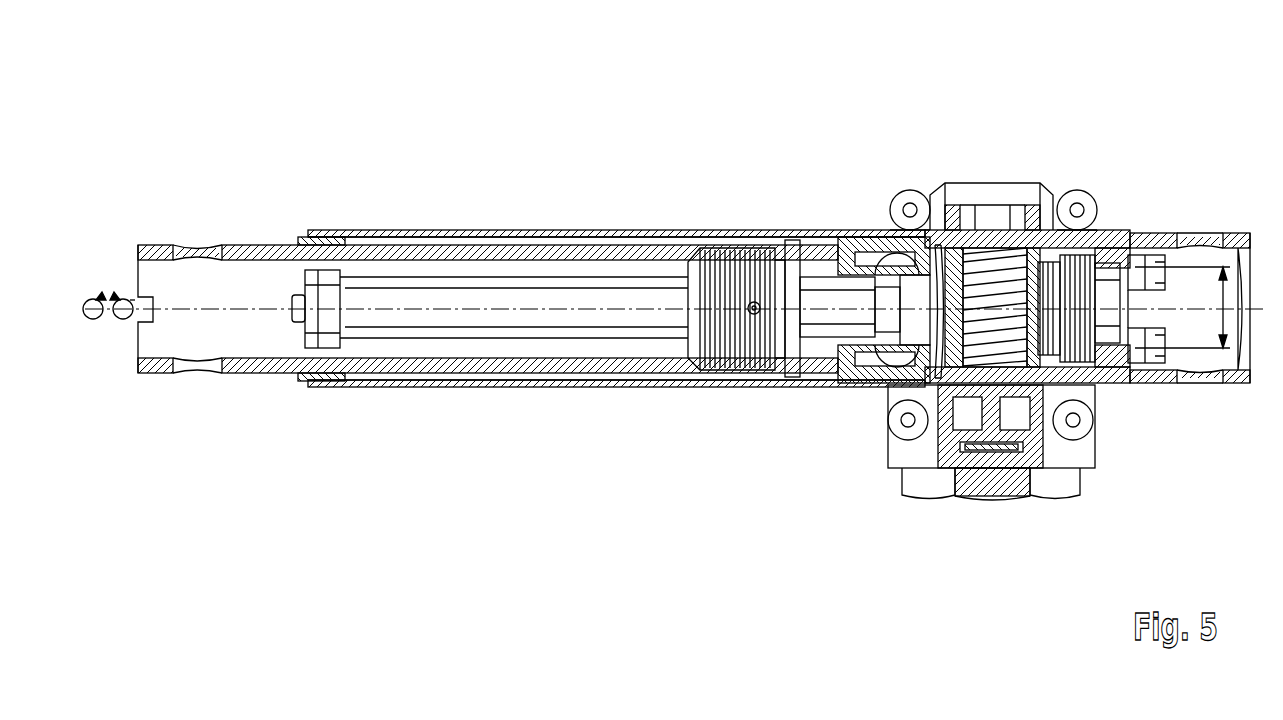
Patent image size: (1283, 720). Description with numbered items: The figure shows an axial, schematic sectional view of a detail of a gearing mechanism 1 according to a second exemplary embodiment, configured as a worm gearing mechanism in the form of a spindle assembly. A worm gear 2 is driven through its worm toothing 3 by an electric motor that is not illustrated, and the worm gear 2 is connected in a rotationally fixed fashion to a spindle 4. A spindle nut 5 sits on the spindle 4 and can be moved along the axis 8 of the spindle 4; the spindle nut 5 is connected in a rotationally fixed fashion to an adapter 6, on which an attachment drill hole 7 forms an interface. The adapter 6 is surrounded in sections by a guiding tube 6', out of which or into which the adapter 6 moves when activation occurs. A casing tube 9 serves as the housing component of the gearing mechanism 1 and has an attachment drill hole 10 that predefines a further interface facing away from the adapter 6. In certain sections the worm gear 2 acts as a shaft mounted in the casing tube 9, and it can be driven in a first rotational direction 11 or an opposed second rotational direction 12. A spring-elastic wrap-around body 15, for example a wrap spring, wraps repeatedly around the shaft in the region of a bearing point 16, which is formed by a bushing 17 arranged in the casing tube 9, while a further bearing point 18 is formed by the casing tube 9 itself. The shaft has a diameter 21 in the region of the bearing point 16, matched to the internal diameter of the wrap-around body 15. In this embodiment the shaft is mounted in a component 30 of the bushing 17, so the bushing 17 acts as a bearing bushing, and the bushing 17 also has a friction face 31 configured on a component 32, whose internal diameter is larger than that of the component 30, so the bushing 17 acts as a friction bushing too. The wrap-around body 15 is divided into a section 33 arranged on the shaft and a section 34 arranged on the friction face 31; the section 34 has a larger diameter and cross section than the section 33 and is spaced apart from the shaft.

The gearing mechanism 1 is at (303, 70).
The worm gear 2 is at (1108, 372).
The worm toothing 3 is at (988, 280).
The spindle 4 is at (815, 292).
The spindle nut 5 is at (728, 275).
The adapter 6 is at (616, 335).
The guiding tube 6' is at (611, 331).
The attachment drill hole 7 is at (200, 250).
The axis 8 is at (540, 300).
The casing tube 9 is at (1238, 236).
The attachment drill hole 10 is at (1203, 240).
The first rotational direction 11 is at (93, 320).
The second rotational direction 12 is at (122, 320).
The spring-elastic wrap-around body 15 is at (1145, 330).
The bearing point 16 is at (1145, 285).
The bushing 17 is at (1115, 268).
The bearing point 18 is at (882, 275).
The diameter 21 is at (1242, 378).
The component 30 is at (1098, 262).
The friction face 31 is at (1092, 372).
The component 32 is at (1077, 205).
The section 33 is at (1045, 232).
The section 34 is at (1080, 430).